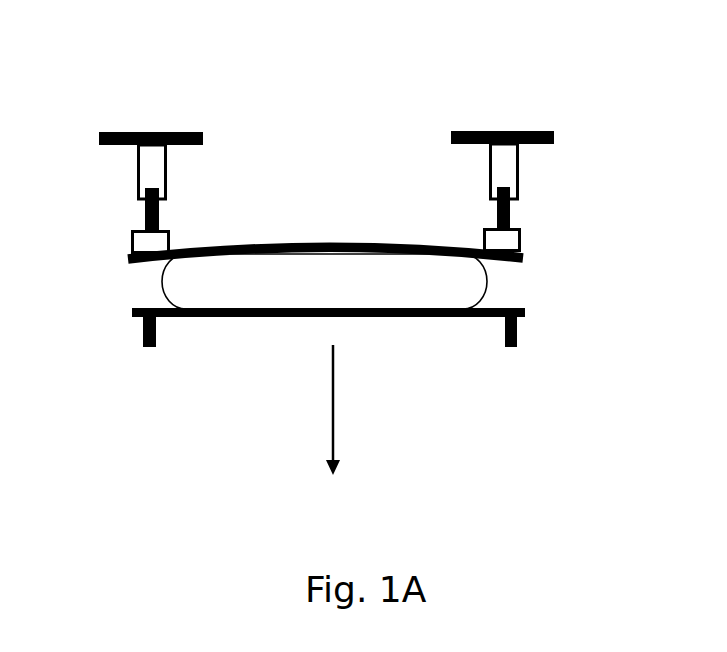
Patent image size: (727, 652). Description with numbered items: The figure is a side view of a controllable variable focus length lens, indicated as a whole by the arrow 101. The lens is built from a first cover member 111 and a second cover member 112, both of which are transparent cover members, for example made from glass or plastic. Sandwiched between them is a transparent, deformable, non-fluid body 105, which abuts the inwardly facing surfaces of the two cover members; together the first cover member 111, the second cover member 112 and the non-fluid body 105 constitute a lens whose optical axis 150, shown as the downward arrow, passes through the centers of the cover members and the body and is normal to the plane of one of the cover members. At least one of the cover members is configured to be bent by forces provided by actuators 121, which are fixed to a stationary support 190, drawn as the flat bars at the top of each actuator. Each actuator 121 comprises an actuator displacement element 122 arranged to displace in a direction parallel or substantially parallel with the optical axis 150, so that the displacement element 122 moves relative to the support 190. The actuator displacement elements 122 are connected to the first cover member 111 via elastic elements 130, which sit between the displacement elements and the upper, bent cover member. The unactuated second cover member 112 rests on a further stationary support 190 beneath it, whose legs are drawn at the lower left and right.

The system 101 is at (117, 80).
The stationary support 190 is at (553, 132).
The actuator 121 is at (522, 175).
The actuator displacement element 122 is at (517, 218).
The elastic element 130 is at (527, 242).
The first cover member 111 is at (130, 260).
The non-fluid body 105 is at (467, 290).
The second cover member 112 is at (130, 312).
The optical axis 150 is at (335, 417).